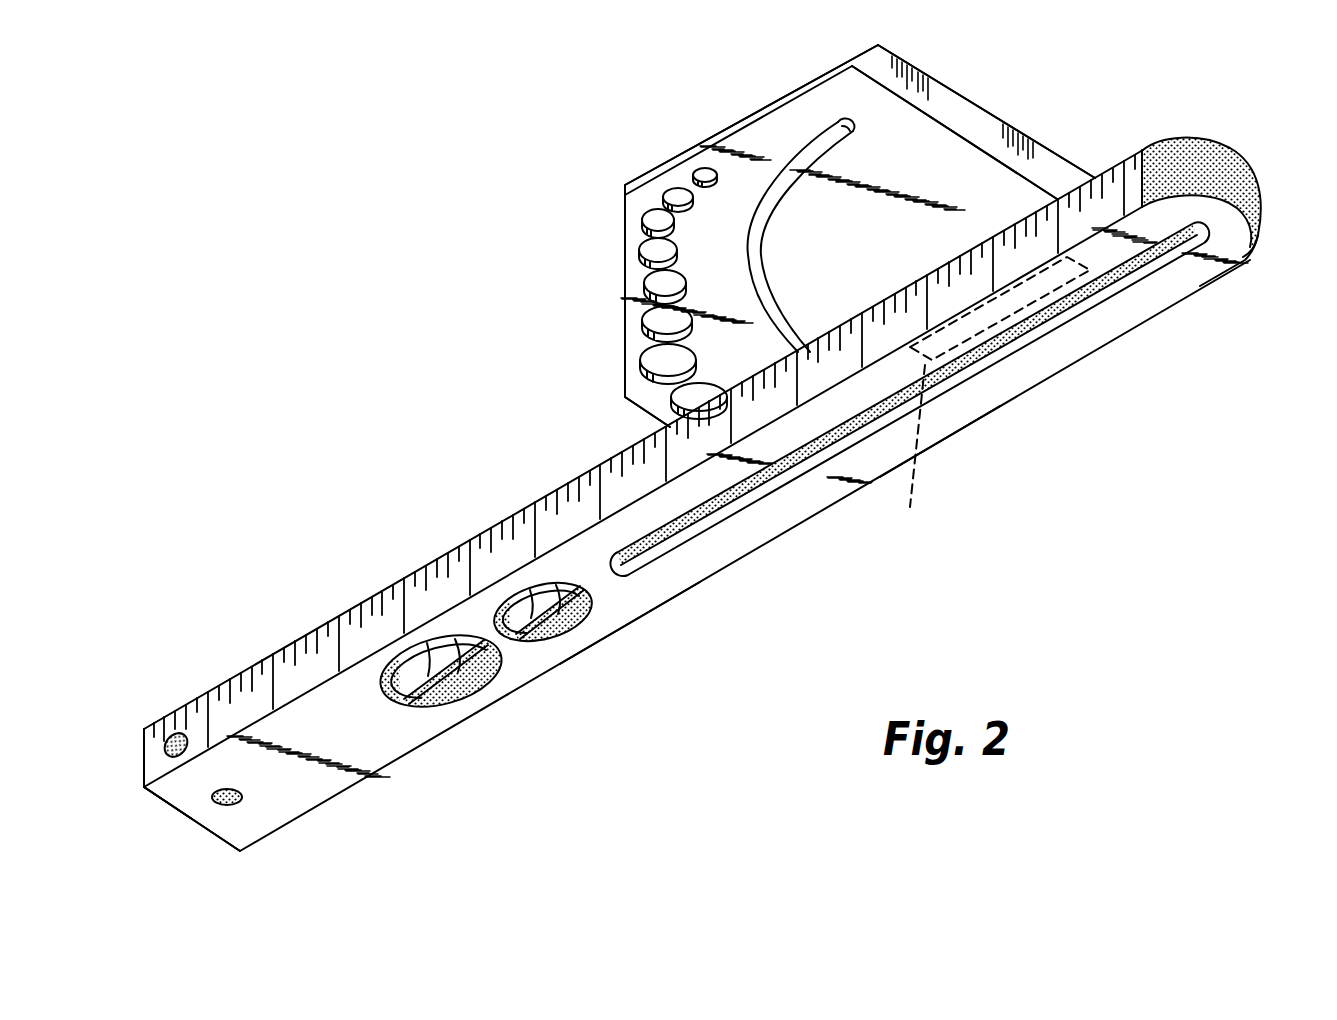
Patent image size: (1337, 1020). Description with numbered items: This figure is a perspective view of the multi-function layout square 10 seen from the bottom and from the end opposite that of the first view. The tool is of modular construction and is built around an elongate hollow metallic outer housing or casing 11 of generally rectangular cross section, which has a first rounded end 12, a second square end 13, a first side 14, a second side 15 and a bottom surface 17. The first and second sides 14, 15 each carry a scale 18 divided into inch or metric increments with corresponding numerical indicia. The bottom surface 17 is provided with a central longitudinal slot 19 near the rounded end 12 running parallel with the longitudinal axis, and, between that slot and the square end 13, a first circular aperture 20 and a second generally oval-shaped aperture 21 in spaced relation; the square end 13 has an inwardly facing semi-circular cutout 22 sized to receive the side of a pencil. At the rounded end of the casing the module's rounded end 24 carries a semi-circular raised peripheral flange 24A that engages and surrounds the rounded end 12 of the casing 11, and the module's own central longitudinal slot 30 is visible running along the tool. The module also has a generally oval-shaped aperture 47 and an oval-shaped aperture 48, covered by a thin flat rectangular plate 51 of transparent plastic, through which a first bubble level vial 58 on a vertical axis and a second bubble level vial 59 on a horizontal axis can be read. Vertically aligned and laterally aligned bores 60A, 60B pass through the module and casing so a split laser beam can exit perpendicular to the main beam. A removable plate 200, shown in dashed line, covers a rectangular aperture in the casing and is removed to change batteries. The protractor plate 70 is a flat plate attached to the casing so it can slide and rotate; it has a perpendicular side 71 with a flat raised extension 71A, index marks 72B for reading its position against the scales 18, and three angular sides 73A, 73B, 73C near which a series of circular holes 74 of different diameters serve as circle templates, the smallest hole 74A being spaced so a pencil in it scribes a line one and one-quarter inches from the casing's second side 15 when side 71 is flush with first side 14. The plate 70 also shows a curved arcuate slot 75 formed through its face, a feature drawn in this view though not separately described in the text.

The multi-function layout square 10 is at (382, 352).
The outer housing or casing 11 is at (1012, 419).
The first rounded end 12 is at (1235, 232).
The second square end 13 is at (218, 843).
The first side 14 is at (620, 627).
The second side 15 is at (505, 518).
The bottom surface 17 is at (928, 436).
The scale 18 is at (398, 584).
The central longitudinal slot 19 is at (1092, 330).
The first circular aperture 20 is at (562, 640).
The second generally oval-shaped aperture 21 is at (450, 705).
The semi-circular cutout 22 is at (198, 822).
The rounded end 24 is at (1193, 147).
The semi-circular raised peripheral flange 24A is at (1201, 193).
The central longitudinal slot 30 is at (1112, 289).
The generally oval-shaped aperture 47 is at (540, 645).
The oval-shaped aperture 48 is at (437, 704).
The thin flat rectangular plate 51 is at (518, 640).
The first bubble level vial 58 is at (585, 634).
The second bubble level vial 59 is at (401, 695).
The vertically aligned bore 60A is at (232, 806).
The laterally aligned bore 60B is at (177, 736).
The protractor plate 70 is at (646, 156).
The perpendicular side 71 is at (967, 112).
The flat raised extension 71A is at (954, 132).
The index marks 72B is at (898, 80).
The angular side 73A is at (762, 117).
The angular side 73B is at (623, 233).
The angular side 73C is at (628, 402).
The circular holes 74 is at (641, 358).
The smallest hole 74A is at (704, 182).
The arcuate slot 75 is at (767, 246).
The removable plate 200 is at (992, 400).